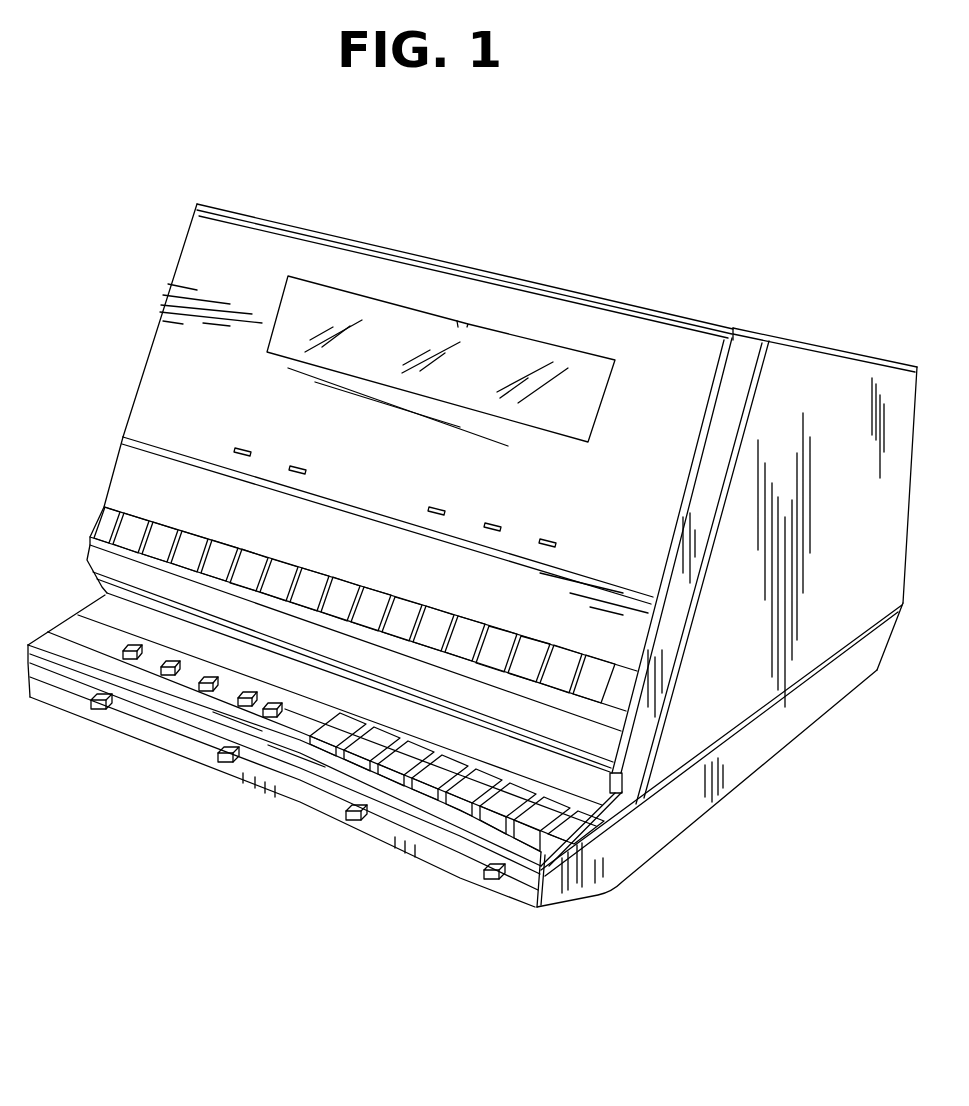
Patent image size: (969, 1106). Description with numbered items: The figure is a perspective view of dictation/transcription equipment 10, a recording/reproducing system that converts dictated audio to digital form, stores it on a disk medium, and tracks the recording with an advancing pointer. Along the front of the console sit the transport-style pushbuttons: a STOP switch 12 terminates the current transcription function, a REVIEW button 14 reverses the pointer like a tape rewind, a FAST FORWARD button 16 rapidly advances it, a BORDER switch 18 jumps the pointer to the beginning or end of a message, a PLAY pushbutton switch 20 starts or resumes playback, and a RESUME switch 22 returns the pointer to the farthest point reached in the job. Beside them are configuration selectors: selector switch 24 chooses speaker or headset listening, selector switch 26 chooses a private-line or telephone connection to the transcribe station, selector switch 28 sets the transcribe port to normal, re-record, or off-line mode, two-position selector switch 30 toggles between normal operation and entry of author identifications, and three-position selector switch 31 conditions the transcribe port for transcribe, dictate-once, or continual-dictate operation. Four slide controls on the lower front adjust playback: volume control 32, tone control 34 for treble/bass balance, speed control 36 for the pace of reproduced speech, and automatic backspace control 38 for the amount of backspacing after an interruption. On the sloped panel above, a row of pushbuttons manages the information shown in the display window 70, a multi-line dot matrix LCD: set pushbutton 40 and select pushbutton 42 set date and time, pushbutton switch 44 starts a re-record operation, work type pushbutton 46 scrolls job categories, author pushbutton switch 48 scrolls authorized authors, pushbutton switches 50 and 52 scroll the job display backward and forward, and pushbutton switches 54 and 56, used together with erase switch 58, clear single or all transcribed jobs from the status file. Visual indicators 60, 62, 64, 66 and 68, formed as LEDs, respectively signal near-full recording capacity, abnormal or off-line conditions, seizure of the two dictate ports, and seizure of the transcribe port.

The dictation/transcription equipment 10 is at (245, 837).
The STOP switch 12 is at (366, 738).
The REVIEW button 14 is at (407, 748).
The FAST FORWARD button 16 is at (439, 763).
The BORDER switch 18 is at (472, 777).
The PLAY pushbutton switch 20 is at (506, 787).
The RESUME switch 22 is at (543, 796).
The selector switch 24 is at (136, 646).
The selector switch 26 is at (172, 662).
The selector switch 28 is at (210, 677).
The two-position selector switch 30 is at (250, 692).
The three-position selector switch 31 is at (276, 704).
The volume control 32 is at (100, 709).
The tone control 34 is at (223, 759).
The speed control 36 is at (354, 822).
The automatic backspace control 38 is at (492, 881).
The set pushbutton 40 is at (166, 532).
The select pushbutton 42 is at (198, 546).
The pushbutton switch 44 is at (256, 567).
The work type pushbutton 46 is at (291, 579).
The author pushbutton switch 48 is at (321, 586).
The pushbutton switch 50 is at (348, 597).
The pushbutton switch 52 is at (386, 607).
The pushbutton switch 54 is at (452, 629).
The pushbutton switch 56 is at (484, 644).
The erase switch 58 is at (548, 657).
The visual indicator 60 is at (246, 446).
The visual indicator 62 is at (302, 462).
The visual indicator 64 is at (439, 506).
The visual indicator 66 is at (495, 522).
The visual indicator 68 is at (556, 538).
The display window 70 is at (600, 422).